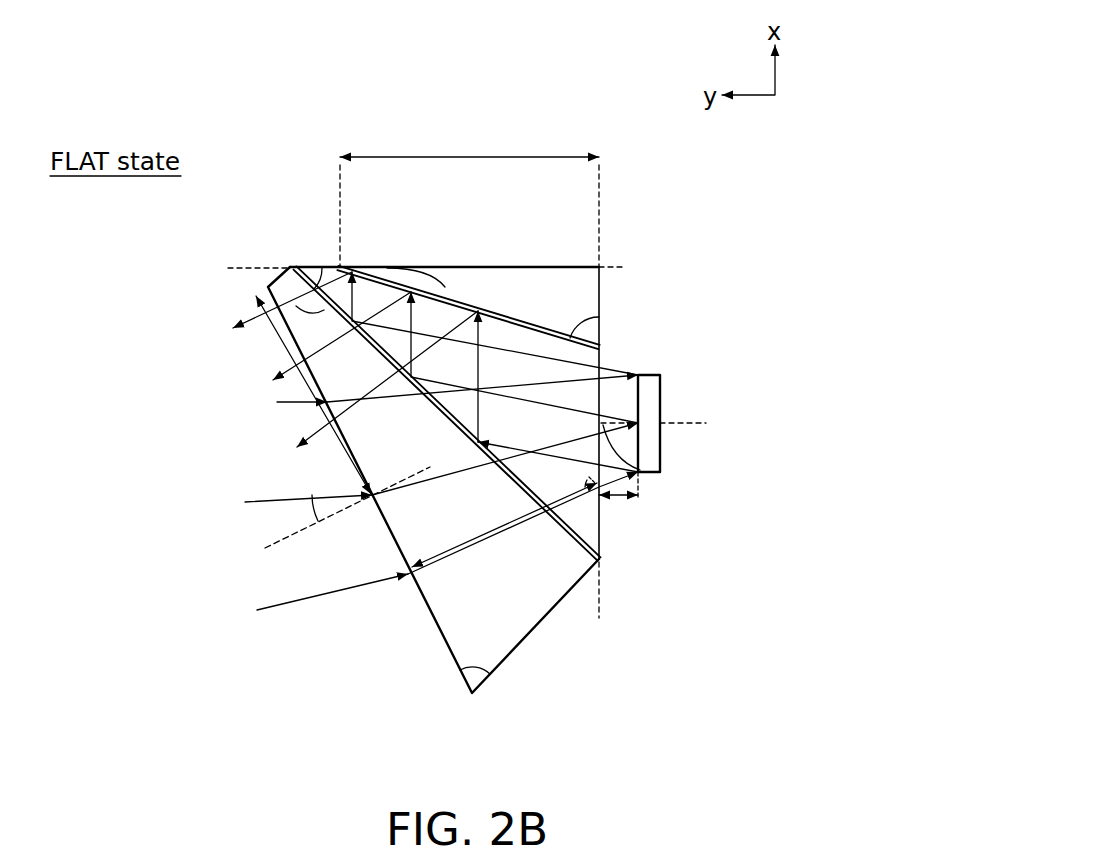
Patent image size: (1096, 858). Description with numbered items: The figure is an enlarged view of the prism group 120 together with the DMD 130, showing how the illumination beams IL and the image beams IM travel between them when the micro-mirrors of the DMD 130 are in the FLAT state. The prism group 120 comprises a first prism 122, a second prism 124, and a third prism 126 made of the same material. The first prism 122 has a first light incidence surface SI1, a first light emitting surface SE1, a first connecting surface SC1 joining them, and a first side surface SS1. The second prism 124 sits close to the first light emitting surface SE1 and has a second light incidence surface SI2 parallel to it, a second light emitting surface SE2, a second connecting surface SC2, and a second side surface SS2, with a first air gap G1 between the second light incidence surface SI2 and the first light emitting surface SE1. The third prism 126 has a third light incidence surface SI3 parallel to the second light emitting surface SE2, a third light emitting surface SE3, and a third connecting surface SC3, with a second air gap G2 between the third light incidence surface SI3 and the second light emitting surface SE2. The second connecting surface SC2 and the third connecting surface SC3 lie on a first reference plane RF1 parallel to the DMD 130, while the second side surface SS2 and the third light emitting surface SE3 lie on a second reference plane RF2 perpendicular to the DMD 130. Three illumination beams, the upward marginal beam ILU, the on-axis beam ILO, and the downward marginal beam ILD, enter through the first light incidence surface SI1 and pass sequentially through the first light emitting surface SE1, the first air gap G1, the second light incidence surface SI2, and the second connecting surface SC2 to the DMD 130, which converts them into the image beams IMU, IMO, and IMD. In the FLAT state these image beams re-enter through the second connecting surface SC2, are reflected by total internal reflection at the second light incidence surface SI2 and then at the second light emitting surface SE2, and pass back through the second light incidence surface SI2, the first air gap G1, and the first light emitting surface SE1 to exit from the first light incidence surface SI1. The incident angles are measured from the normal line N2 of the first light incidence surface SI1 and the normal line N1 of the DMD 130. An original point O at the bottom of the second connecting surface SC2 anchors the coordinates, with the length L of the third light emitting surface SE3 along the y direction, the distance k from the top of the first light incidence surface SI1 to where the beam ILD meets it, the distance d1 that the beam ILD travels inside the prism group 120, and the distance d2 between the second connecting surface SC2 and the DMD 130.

The prism group 120 is at (838, 600).
The first prism 122 is at (543, 603).
The second prism 124 is at (603, 540).
The third prism 126 is at (584, 284).
The DMD 130 is at (651, 399).
The first side surface SS1 is at (263, 289).
The second side surface SS2 is at (296, 263).
The first light emitting surface SE1 is at (601, 562).
The second light emitting surface SE2 is at (344, 271).
The third light emitting surface SE3 is at (551, 262).
The first light incidence surface SI1 is at (443, 644).
The second light incidence surface SI2 is at (292, 278).
The third light incidence surface SI3 is at (555, 341).
The first connecting surface SC1 is at (510, 659).
The second connecting surface SC2 is at (604, 553).
The third connecting surface SC3 is at (602, 303).
The first air gap G1 is at (562, 524).
The second air gap G2 is at (536, 331).
The normal line of the DMD N1 is at (673, 425).
The normal line of the first light incidence surface N2 is at (296, 533).
The first reference plane RF1 is at (604, 607).
The second reference plane RF2 is at (276, 278).
The original point O is at (601, 562).
The length of the third light emitting surface L is at (469, 195).
The travel distance of the illumination beam ILD d1 is at (504, 525).
The distance between the second connecting surface and the DMD d2 is at (618, 514).
The distance k is at (313, 395).
The image beams IM is at (150, 340).
The upward marginal image beam IMU is at (272, 378).
The on-axis image beam IMO is at (324, 400).
The downward marginal image beam IMD is at (296, 446).
The illumination beams IL is at (165, 490).
The upward marginal illumination beam ILU is at (280, 402).
The on-axis illumination beam ILO is at (250, 503).
The downward marginal illumination beam ILD is at (273, 605).